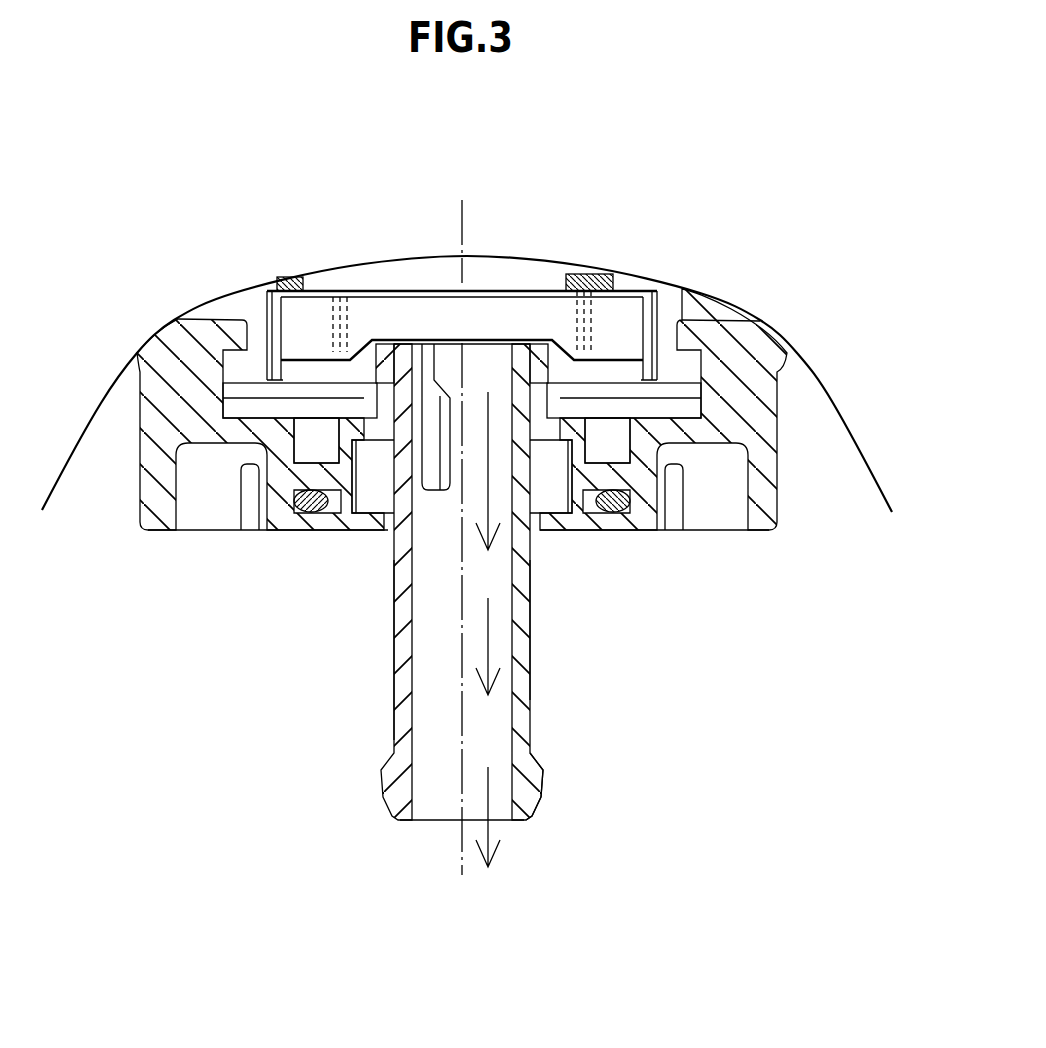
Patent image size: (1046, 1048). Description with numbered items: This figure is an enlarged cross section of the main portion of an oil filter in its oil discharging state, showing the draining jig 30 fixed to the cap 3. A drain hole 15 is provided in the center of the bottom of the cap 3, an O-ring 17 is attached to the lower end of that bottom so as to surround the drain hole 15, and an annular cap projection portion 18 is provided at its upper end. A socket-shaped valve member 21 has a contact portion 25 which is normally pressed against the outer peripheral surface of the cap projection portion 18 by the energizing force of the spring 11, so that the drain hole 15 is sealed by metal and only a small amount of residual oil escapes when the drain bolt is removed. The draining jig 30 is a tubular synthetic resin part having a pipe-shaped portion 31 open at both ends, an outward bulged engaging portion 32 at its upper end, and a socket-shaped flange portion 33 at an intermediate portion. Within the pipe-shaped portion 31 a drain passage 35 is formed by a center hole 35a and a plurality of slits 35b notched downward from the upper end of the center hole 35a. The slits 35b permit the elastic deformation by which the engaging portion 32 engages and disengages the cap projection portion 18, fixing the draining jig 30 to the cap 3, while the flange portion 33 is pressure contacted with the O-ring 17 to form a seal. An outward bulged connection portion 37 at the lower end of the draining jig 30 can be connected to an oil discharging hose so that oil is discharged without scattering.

The cap 3 is at (770, 425).
The spring 11 is at (536, 352).
The drain hole 15 is at (353, 535).
The O-ring 17 is at (660, 533).
The cap projection portion 18 is at (587, 383).
The valve member 21 is at (412, 313).
The contact portion 25 is at (337, 292).
The draining jig 30 is at (560, 680).
The pipe-shaped portion 31 is at (524, 722).
The engaging portion 32 is at (513, 290).
The flange portion 33 is at (625, 505).
The drain passage 35 is at (430, 747).
The center hole 35a is at (410, 585).
The slits 35b is at (441, 337).
The connection portion 37 is at (533, 787).